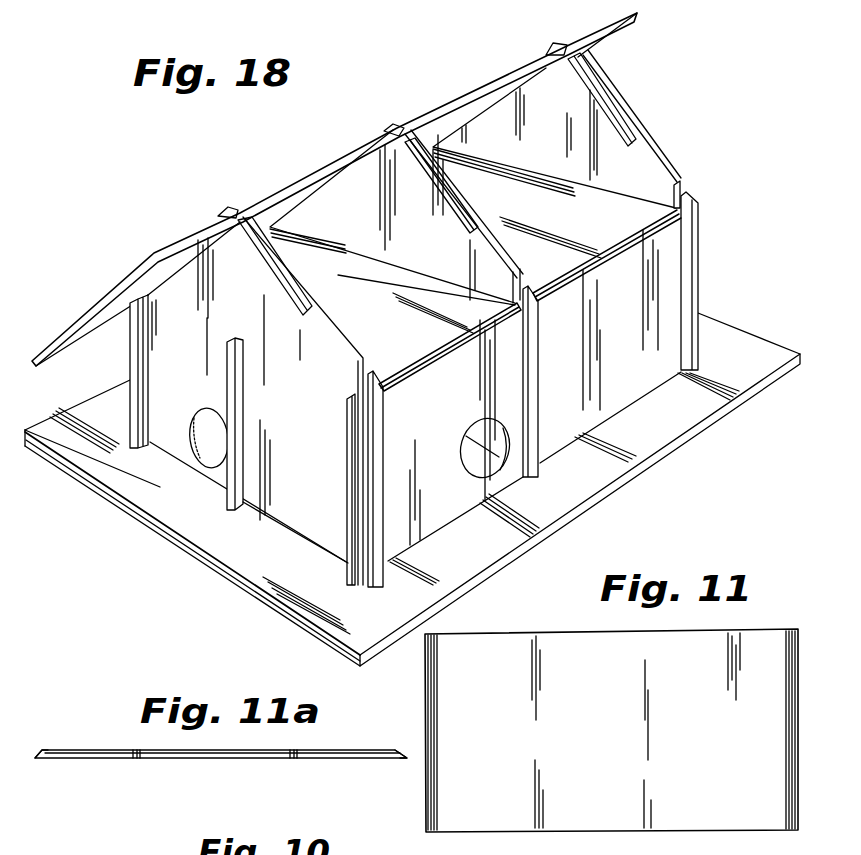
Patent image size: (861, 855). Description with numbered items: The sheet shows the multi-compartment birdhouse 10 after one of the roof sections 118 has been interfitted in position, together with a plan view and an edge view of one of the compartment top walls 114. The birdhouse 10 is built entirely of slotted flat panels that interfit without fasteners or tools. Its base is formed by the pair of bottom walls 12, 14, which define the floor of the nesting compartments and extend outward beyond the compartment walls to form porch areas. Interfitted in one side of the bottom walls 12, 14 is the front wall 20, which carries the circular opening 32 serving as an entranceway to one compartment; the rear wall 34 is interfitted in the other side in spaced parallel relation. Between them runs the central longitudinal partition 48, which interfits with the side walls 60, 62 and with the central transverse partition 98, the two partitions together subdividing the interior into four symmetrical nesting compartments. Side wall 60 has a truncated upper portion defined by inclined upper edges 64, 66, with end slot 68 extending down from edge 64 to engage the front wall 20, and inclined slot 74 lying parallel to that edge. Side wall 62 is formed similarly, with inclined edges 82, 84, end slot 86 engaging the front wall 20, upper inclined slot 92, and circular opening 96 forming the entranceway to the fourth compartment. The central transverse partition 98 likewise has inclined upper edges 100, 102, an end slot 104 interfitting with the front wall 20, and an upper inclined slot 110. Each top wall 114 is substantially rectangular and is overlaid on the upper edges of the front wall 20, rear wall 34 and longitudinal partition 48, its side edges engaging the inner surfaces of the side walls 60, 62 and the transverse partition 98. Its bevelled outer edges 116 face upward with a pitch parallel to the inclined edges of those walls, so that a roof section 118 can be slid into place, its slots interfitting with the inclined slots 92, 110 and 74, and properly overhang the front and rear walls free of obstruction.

In FIG. 18, the multi-compartment birdhouse 10 is at (348, 113).
In FIG. 18, the bottom wall 12 is at (723, 327).
In FIG. 18, the bottom wall 14 is at (237, 565).
In FIG. 18, the front wall 20 is at (560, 395).
In FIG. 18, the circular opening 32 is at (480, 424).
In FIG. 18, the rear wall 34 is at (131, 353).
In FIG. 18, the central longitudinal partition 48 is at (227, 493).
In FIG. 18, the side wall 60 is at (700, 250).
In FIG. 18, the side wall 62 is at (313, 532).
In FIG. 18, the inclined upper edge 64 is at (586, 197).
In FIG. 18, the inclined upper edge 66 is at (546, 52).
In FIG. 18, the end slot 68 is at (684, 192).
In FIG. 18, the inclined slot 74 is at (604, 108).
In FIG. 18, the inclined edge 82 is at (234, 384).
In FIG. 18, the inclined edge 84 is at (213, 217).
In FIG. 18, the end slot 86 is at (360, 377).
In FIG. 18, the upper inclined slot 92 is at (267, 272).
In FIG. 18, the circular opening 96 is at (207, 412).
In FIG. 18, the central transverse partition 98 is at (413, 285).
In FIG. 18, the inclined upper edge 100 is at (470, 204).
In FIG. 18, the inclined upper edge 102 is at (376, 133).
In FIG. 18, the end slot 104 is at (523, 288).
In FIG. 18, the upper inclined slot 110 is at (431, 193).
In FIG. 18, the top wall 114 is at (402, 277).
In FIG. 11, the top wall 114 is at (569, 637).
In FIG. 11A, the top wall 114 is at (193, 752).
In FIG. 18, the bevelled outer edge 116 is at (430, 353).
In FIG. 11, the bevelled outer edge 116 is at (793, 629).
In FIG. 11A, the bevelled outer edge 116 is at (40, 749).
In FIG. 18, the roof section 118 is at (296, 184).